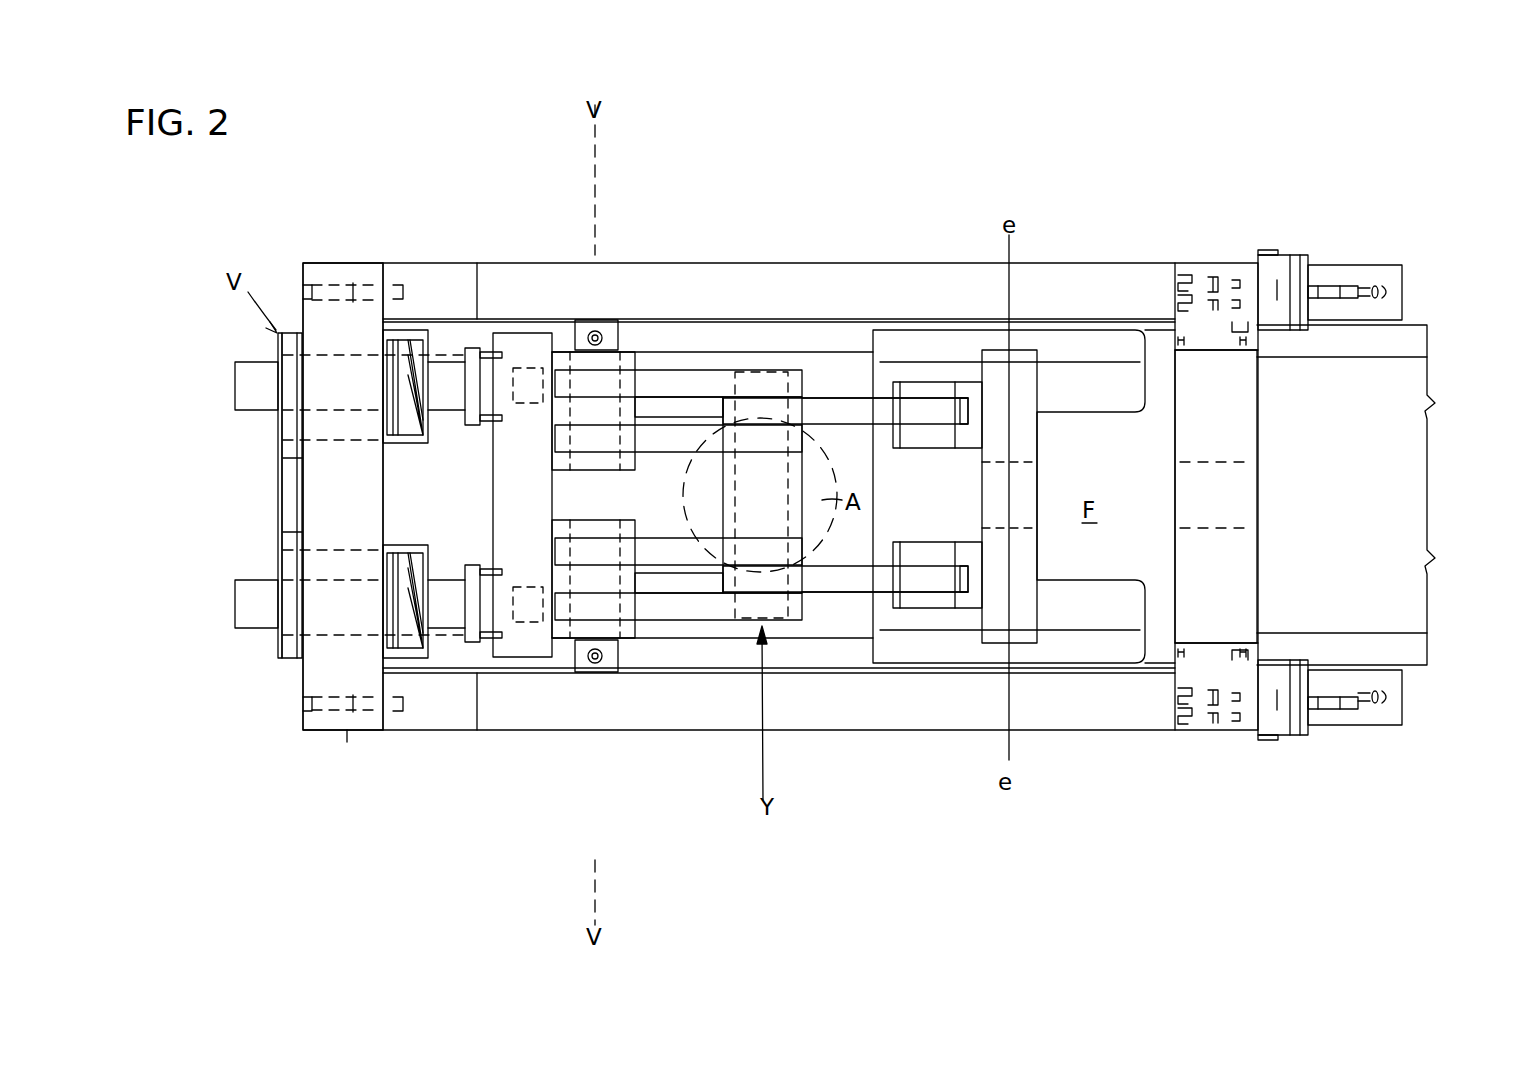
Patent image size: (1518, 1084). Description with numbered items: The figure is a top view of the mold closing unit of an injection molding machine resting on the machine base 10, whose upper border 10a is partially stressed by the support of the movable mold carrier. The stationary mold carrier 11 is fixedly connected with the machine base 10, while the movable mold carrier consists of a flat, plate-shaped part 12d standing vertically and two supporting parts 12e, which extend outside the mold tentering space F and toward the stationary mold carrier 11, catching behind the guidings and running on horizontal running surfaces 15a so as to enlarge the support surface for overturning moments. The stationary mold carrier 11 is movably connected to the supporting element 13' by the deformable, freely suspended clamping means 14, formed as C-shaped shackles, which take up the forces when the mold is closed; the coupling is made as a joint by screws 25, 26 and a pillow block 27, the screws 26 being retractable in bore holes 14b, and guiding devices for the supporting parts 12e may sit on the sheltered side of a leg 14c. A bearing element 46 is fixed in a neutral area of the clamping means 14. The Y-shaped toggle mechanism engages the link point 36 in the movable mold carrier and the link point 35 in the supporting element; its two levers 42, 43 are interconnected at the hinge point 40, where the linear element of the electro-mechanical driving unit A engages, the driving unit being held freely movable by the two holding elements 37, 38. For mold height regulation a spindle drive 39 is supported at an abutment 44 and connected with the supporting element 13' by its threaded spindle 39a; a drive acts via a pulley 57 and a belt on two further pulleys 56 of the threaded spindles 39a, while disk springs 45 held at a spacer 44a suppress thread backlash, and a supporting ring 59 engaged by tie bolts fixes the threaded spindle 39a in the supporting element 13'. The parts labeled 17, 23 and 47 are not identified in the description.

The machine base 10 is at (1367, 560).
The upper border of the machine base 10a is at (1392, 650).
The stationary mold carrier 11 is at (1240, 430).
The flat, plate-shaped part 12d is at (1030, 425).
The supporting parts 12e is at (1090, 398).
The supporting element 13' is at (522, 495).
The clamping means 14 is at (1127, 262).
The bore holes 14b is at (1410, 260).
The leg of the clamping means 14c is at (928, 290).
The horizontal running surfaces 15a is at (808, 335).
The clamp 17 is at (1262, 290).
The guide surface 23 is at (1265, 357).
The screws 25 is at (1188, 265).
The screws 26 is at (1335, 268).
The pillow block 27 is at (1290, 278).
The link point 35 is at (605, 437).
The link point 36 is at (930, 452).
The holding element 37 is at (693, 410).
The holding element 38 is at (860, 425).
The spindle drive 39 is at (235, 422).
The threaded spindle 39a is at (248, 377).
The hinge point 40 is at (775, 486).
The lever 42 is at (652, 380).
The lever 43 is at (832, 410).
The abutment 44 is at (348, 262).
The spacer 44a is at (409, 330).
The disk springs 45 is at (433, 362).
The bearing element 46 is at (598, 320).
The bolt 47 is at (349, 738).
The pulleys 56 is at (290, 437).
The pulley 57 is at (280, 488).
The supporting ring 59 is at (492, 345).